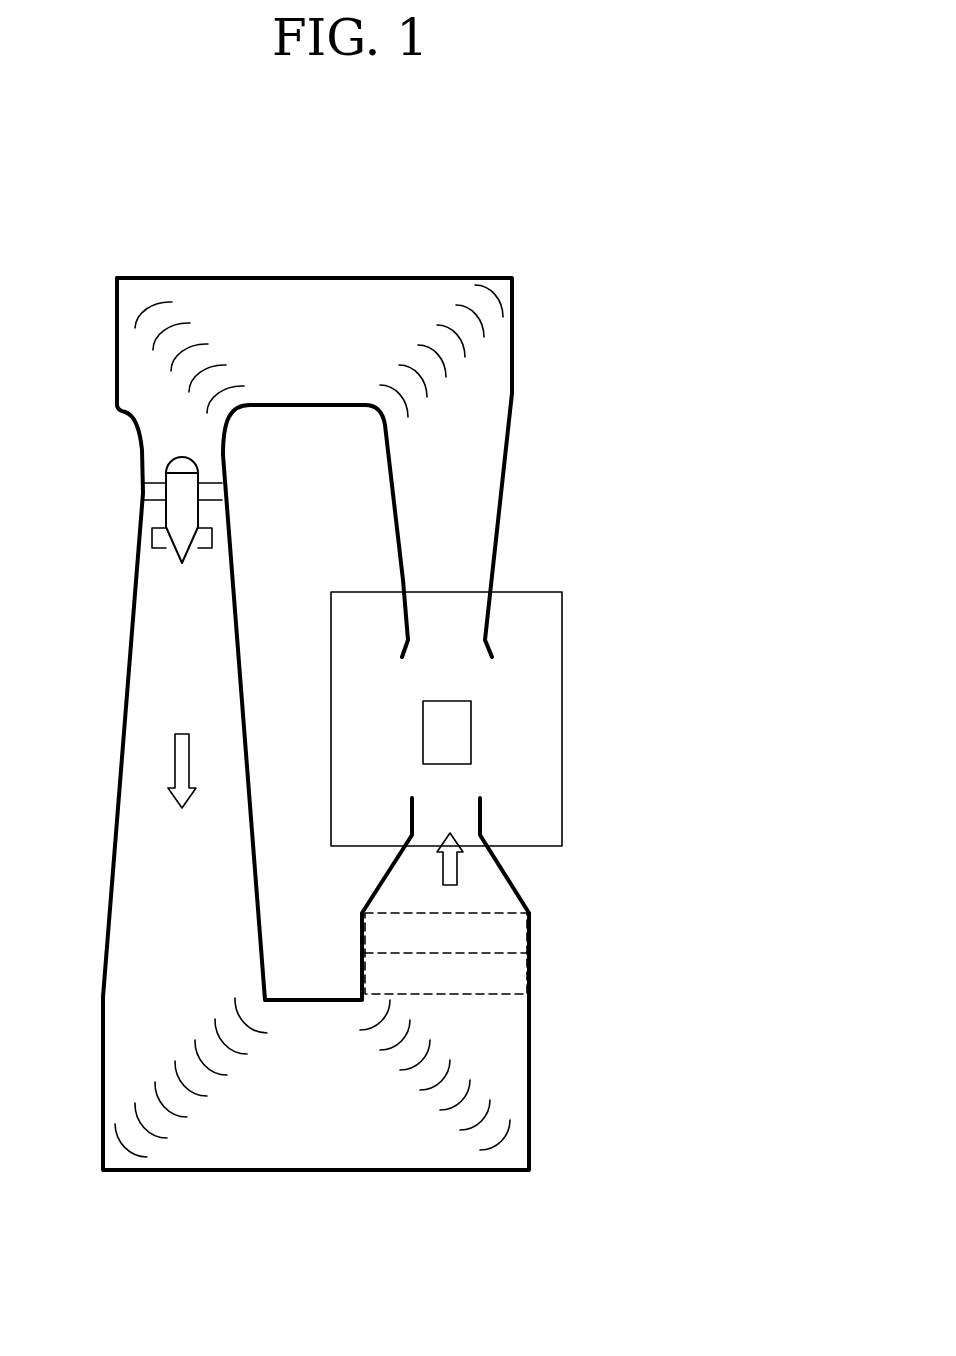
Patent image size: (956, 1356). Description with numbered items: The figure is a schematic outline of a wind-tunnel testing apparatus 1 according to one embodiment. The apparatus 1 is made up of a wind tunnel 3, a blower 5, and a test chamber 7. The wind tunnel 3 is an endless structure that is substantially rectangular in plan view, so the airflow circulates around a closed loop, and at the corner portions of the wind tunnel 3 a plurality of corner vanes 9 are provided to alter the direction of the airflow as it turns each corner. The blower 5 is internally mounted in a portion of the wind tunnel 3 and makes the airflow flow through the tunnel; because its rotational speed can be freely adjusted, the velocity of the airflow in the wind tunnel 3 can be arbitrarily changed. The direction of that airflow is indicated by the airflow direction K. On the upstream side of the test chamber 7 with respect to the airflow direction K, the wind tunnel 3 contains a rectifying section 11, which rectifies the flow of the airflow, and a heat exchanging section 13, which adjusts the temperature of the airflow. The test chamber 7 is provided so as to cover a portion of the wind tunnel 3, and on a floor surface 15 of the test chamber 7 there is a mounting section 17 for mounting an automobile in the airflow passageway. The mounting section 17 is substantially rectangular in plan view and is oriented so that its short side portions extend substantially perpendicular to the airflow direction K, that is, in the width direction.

The wind-tunnel testing apparatus 1 is at (612, 225).
The wind tunnel 3 is at (323, 278).
The blower 5 is at (163, 513).
The test chamber 7 is at (600, 655).
The corner vanes 9 is at (152, 302).
The rectifying section 11 is at (502, 933).
The heat exchanging section 13 is at (503, 977).
The floor surface 15 is at (528, 780).
The mounting section 17 is at (471, 735).
The airflow direction K is at (173, 766).